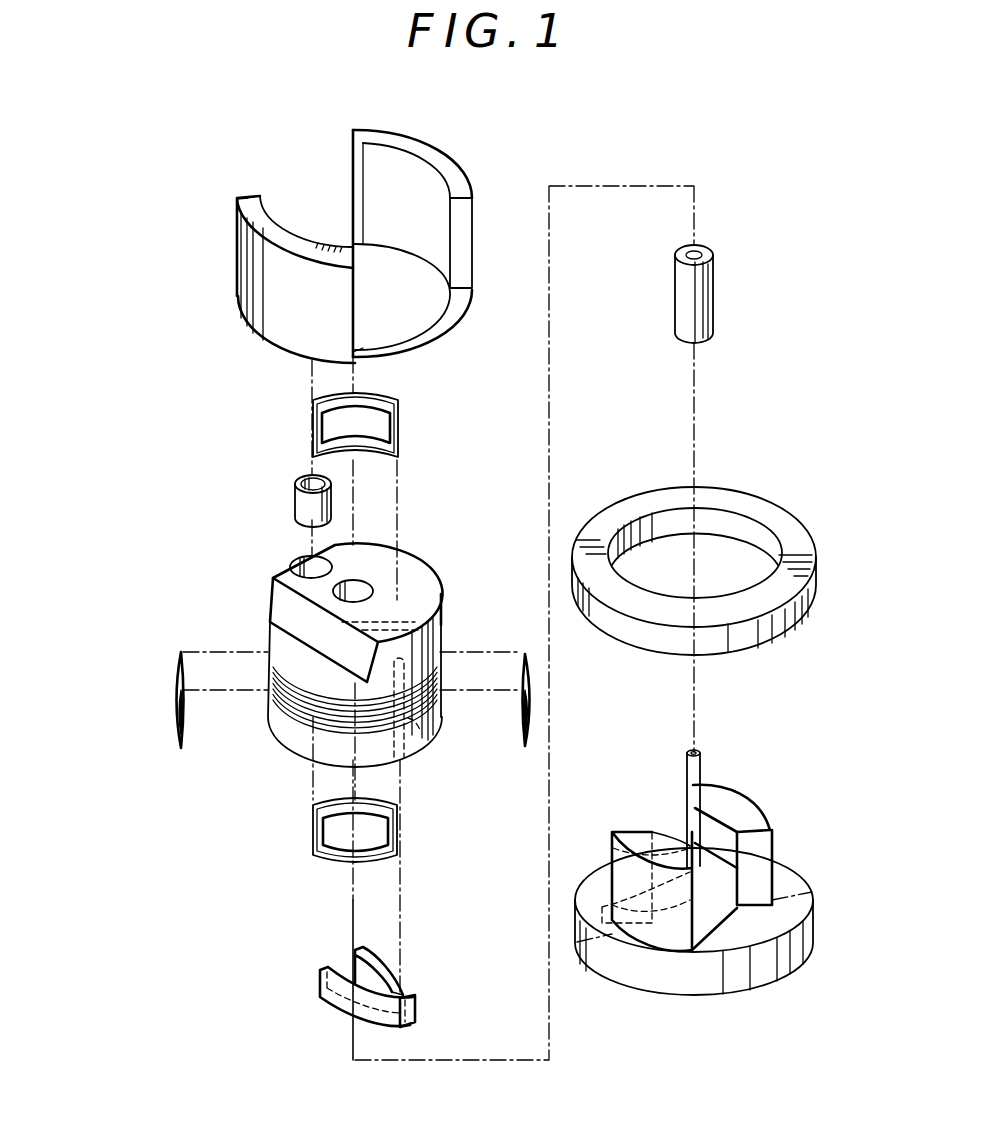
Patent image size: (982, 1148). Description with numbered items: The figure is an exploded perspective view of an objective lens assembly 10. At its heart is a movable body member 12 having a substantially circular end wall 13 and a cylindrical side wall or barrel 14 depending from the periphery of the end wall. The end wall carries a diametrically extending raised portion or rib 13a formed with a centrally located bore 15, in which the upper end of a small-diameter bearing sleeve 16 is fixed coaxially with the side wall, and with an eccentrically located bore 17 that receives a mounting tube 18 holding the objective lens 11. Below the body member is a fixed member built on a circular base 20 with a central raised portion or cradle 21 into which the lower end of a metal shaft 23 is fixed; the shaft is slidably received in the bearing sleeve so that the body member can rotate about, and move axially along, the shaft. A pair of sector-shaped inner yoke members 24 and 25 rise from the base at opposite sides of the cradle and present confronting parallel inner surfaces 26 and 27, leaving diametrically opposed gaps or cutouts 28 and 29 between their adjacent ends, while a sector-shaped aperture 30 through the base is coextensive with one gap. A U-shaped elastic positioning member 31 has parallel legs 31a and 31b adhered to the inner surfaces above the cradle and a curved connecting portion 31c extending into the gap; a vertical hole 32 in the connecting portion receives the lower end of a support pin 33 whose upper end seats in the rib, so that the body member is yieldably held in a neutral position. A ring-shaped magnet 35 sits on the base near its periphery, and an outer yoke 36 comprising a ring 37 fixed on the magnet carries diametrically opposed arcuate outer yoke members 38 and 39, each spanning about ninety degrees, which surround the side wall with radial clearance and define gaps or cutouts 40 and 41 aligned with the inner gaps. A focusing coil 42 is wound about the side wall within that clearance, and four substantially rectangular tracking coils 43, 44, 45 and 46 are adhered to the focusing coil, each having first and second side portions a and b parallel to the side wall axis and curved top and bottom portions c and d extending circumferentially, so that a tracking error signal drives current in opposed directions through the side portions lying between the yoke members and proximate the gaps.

The objective lens assembly 10 is at (586, 183).
The objective lens 11 is at (305, 478).
The movable body member 12 is at (350, 658).
The end wall 13 is at (275, 637).
The raised portion or rib 13a is at (342, 578).
The cylindrical side wall or barrel 14 is at (404, 730).
The bore 15 is at (357, 585).
The bearing sleeve 16 is at (703, 304).
The bore 17 is at (300, 560).
The mounting tube 18 is at (284, 490).
The base 20 is at (777, 965).
The raised portion or cradle 21 is at (757, 845).
The shaft 23 is at (687, 762).
The inner yoke member 24 is at (626, 865).
The inner yoke member 25 is at (770, 775).
The inner surface 26 is at (672, 840).
The inner surface 27 is at (713, 818).
The gap or cutout 28 is at (763, 847).
The gap or cutout 29 is at (630, 837).
The sector-shaped aperture 30 is at (607, 903).
The elastic positioning member 31 is at (358, 978).
The leg 31a is at (320, 987).
The leg 31b is at (398, 932).
The curved connecting portion 31c is at (403, 993).
The vertical hole 32 is at (418, 1000).
The support pin 33 is at (418, 724).
The ring-shaped magnet 35 is at (765, 630).
The outer yoke 36 is at (355, 246).
The ring 37 is at (447, 315).
The outer yoke member 38 is at (258, 290).
The outer yoke member 39 is at (452, 165).
The gap or cutout 40 is at (463, 221).
The gap or cutout 41 is at (239, 197).
The focusing coil 42 is at (290, 728).
The tracking coil 43 is at (183, 744).
The tracking coil 44 is at (313, 847).
The tracking coil 45 is at (525, 730).
The tracking coil 46 is at (399, 415).
The first side portion a is at (398, 433).
The second side portion b is at (311, 428).
The top portion c is at (377, 399).
The bottom portion d is at (372, 455).